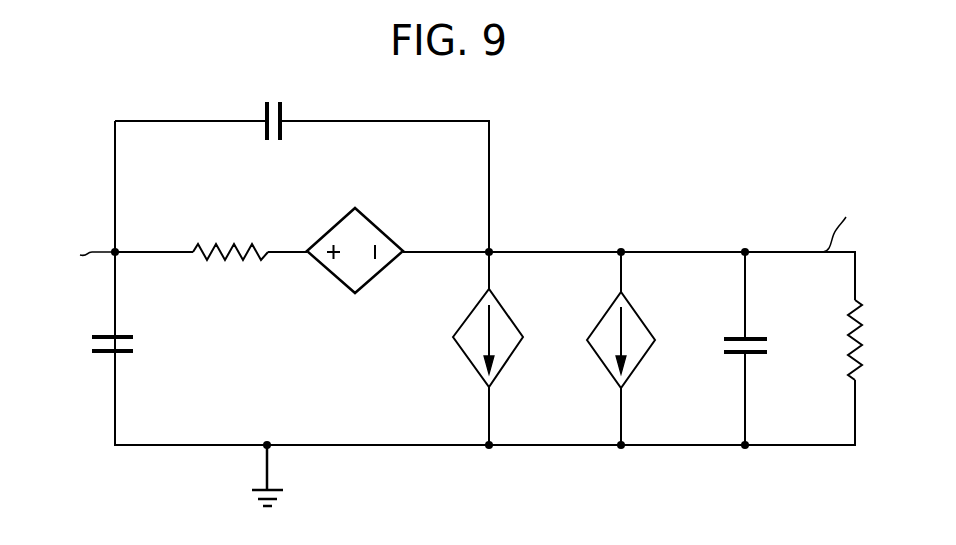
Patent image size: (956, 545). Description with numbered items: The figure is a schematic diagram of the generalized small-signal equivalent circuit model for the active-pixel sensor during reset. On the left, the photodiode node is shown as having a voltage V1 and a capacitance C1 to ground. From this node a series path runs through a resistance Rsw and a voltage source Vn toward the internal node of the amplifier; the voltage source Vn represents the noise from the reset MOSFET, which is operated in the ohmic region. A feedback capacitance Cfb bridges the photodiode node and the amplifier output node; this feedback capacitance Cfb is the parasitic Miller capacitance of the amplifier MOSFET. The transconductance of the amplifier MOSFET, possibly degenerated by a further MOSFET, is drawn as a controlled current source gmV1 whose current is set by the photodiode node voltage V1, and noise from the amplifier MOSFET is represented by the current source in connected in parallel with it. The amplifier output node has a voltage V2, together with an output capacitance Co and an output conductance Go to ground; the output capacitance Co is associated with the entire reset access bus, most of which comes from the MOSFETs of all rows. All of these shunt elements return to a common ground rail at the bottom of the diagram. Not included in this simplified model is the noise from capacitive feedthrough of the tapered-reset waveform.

The feedback capacitance Cfb is at (270, 143).
The switch resistance Rsw is at (230, 269).
The voltage source Vn is at (355, 269).
The photodiode node voltage V1 is at (86, 254).
The photodiode node capacitance C1 is at (131, 348).
The current source in is at (469, 338).
The controlled current source gmV1 is at (590, 340).
The output capacitance Co is at (725, 348).
The output conductance Go is at (832, 340).
The amplifier output node voltage V2 is at (847, 230).